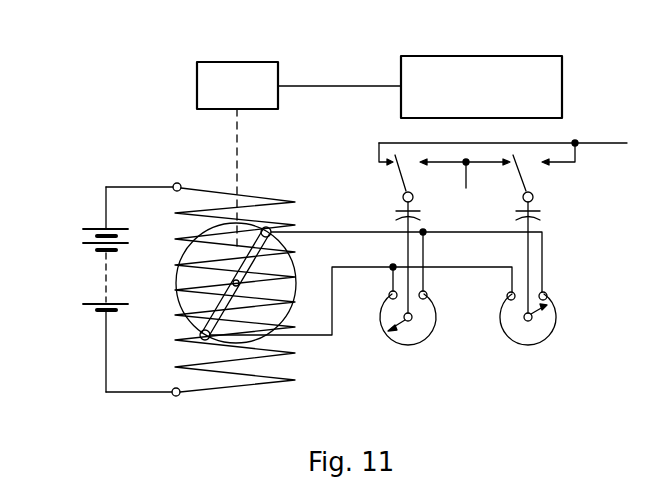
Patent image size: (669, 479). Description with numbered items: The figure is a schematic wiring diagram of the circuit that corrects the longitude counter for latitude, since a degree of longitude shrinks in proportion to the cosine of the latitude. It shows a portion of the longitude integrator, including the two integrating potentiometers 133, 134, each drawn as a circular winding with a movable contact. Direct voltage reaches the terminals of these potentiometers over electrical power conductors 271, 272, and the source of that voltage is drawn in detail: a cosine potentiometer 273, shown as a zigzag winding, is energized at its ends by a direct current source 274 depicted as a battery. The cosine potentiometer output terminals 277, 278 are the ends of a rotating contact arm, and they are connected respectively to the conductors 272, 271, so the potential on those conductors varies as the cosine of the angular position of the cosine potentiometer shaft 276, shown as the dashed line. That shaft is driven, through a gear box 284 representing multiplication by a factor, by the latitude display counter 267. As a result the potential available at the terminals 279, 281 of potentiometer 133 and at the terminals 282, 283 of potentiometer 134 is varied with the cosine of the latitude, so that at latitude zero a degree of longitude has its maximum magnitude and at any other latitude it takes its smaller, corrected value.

The integrating potentiometer 133 is at (387, 340).
The integrating potentiometer 134 is at (516, 338).
The latitude display counter 267 is at (401, 103).
The electrical power conductor 271 is at (373, 231).
The electrical power conductor 272 is at (333, 328).
The cosine potentiometer 273 is at (253, 422).
The direct current source 274 is at (122, 211).
The cosine potentiometer shaft 276 is at (237, 153).
The cosine potentiometer output terminal 277 is at (200, 335).
The cosine potentiometer output terminal 278 is at (284, 243).
The terminal of integrating potentiometer 279 is at (391, 270).
The terminal of integrating potentiometer 281 is at (424, 232).
The terminal of integrating potentiometer 282 is at (508, 292).
The terminal of integrating potentiometer 283 is at (546, 293).
The gear box 284 is at (258, 109).